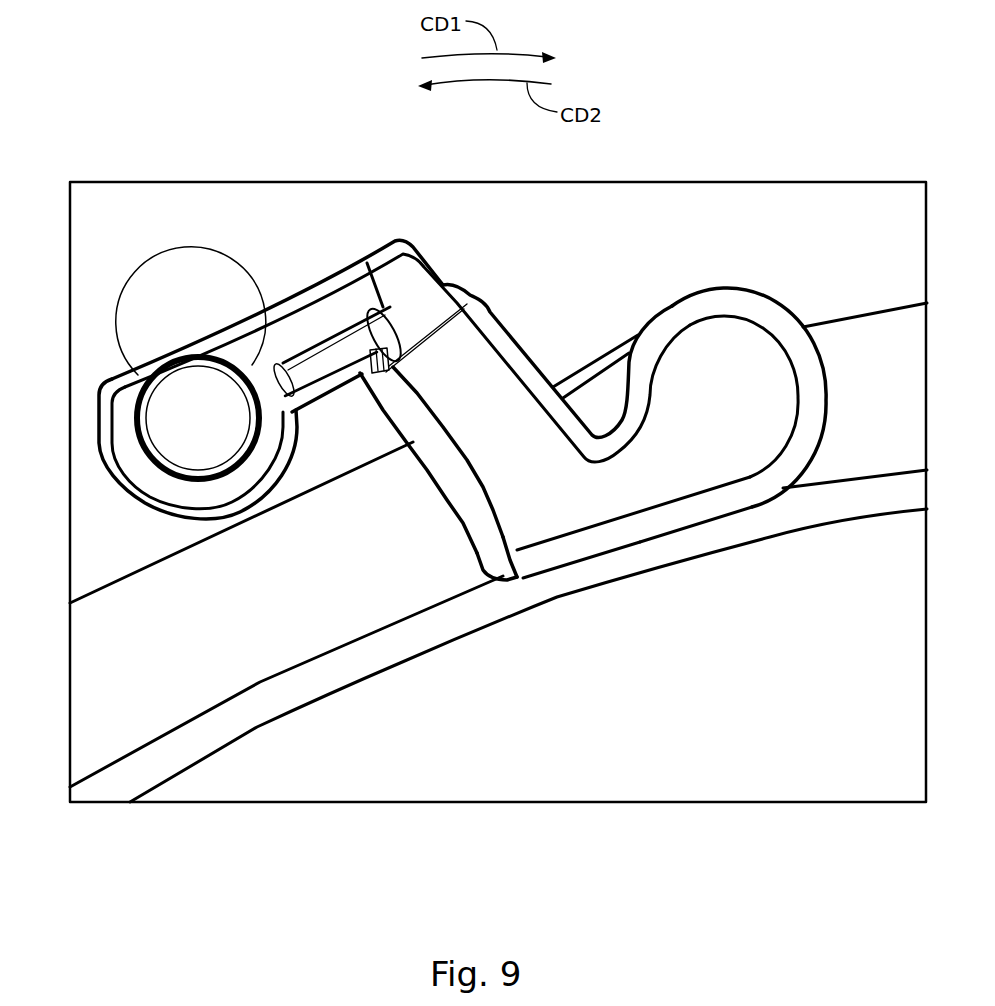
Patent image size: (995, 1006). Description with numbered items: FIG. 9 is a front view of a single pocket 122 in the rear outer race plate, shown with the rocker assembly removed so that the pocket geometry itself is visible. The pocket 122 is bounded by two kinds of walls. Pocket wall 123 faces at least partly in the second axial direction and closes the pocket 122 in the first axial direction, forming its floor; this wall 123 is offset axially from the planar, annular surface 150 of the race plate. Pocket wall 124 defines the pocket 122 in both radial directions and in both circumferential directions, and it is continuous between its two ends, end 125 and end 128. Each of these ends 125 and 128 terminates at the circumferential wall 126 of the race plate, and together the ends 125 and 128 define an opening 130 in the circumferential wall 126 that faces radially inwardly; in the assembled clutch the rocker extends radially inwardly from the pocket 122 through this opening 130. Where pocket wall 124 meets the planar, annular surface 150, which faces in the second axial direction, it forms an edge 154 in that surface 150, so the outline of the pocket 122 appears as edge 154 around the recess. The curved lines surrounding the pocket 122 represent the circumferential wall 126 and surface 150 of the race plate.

The pocket 122 is at (467, 484).
The pocket wall 123 is at (752, 385).
The pocket wall 124 is at (282, 321).
The end 125 is at (747, 517).
The circumferential wall 126 is at (327, 660).
The end 128 is at (507, 580).
The opening 130 is at (657, 557).
The planar, annular surface 150 is at (388, 580).
The edge 154 is at (148, 360).